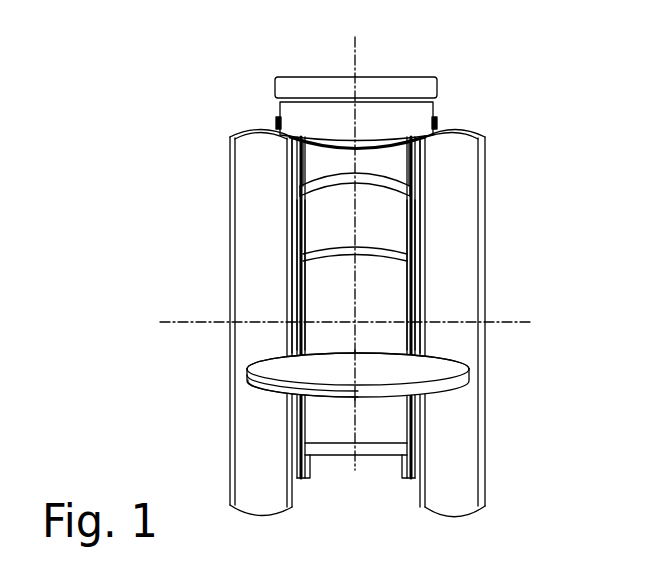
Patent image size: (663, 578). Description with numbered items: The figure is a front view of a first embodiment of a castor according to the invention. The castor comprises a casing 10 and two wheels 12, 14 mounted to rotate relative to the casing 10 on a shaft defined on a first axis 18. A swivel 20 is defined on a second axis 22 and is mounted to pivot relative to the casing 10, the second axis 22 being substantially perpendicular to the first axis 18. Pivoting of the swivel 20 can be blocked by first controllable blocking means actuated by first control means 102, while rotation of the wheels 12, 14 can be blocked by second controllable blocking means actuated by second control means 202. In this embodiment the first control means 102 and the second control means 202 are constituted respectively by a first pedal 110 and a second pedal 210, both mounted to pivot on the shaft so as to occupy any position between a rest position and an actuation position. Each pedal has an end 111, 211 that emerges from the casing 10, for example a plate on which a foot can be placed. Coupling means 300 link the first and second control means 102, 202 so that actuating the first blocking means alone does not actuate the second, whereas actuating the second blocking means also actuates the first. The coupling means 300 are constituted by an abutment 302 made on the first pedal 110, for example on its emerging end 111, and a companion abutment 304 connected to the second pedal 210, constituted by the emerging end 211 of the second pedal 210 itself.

The casing 10 is at (384, 159).
The wheel 12 is at (238, 415).
The wheel 14 is at (465, 417).
The first axis 18 is at (384, 325).
The swivel 20 is at (382, 113).
The second axis 22 is at (355, 60).
The first control means 102 is at (385, 293).
The first pedal 110 is at (377, 213).
The emerging end of the first pedal 111 is at (497, 377).
The second control means 202 is at (320, 292).
The second pedal 210 is at (328, 220).
The emerging end of the second pedal 211 is at (313, 373).
The coupling means 300 is at (322, 393).
The abutment 302 is at (250, 380).
The companion abutment 304 is at (247, 370).